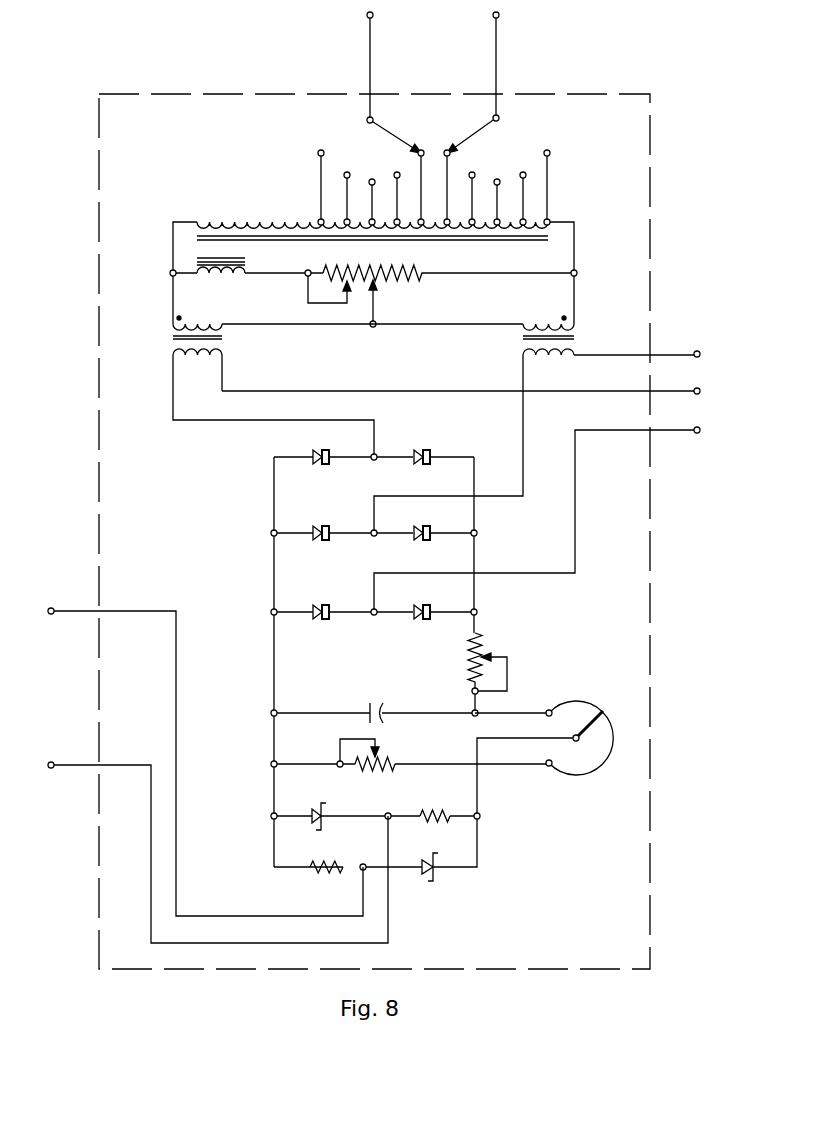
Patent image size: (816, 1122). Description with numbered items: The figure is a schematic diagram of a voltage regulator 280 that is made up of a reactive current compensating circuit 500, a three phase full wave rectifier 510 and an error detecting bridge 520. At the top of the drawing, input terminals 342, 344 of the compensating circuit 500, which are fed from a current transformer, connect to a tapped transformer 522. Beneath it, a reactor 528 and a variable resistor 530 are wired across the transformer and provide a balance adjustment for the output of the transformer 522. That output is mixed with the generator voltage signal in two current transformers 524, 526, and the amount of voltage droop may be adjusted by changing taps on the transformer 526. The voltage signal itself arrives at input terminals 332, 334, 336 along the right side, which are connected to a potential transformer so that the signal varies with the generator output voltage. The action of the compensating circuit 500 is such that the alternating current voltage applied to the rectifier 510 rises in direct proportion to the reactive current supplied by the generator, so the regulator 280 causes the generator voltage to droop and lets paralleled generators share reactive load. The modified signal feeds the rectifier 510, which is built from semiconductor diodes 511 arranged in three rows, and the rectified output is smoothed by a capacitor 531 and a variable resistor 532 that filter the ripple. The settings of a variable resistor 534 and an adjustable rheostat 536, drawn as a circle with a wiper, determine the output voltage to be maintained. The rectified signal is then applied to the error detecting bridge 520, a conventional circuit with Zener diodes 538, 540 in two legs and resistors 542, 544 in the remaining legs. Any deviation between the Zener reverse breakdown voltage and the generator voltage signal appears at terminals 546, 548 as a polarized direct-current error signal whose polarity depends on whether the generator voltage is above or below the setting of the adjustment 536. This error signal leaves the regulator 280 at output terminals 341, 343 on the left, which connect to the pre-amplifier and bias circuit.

The voltage regulator 280 is at (652, 757).
The input terminal 342 is at (367, 16).
The input terminal 344 is at (499, 17).
The reactive current compensating circuit 500 is at (157, 310).
The tapped transformer 522 is at (282, 210).
The reactor 528 is at (208, 276).
The variable resistor 530 is at (399, 280).
The current transformer 524 is at (222, 336).
The current transformer 526 is at (523, 337).
The input terminal 336 is at (712, 348).
The input terminal 334 is at (712, 385).
The input terminal 332 is at (712, 424).
The three phase full wave rectifier 510 is at (250, 540).
The semiconductor diode 511 is at (422, 451).
The variable resistor 532 is at (483, 651).
The capacitor 531 is at (376, 703).
The adjustable rheostat 536 is at (573, 703).
The variable resistor 534 is at (388, 757).
The error detecting bridge 520 is at (246, 848).
The Zener diode 538 is at (316, 810).
The terminal 546 is at (271, 816).
The resistor 542 is at (421, 810).
The terminal 548 is at (480, 816).
The resistor 544 is at (342, 872).
The Zener diode 540 is at (425, 881).
The output terminal 341 is at (48, 610).
The output terminal 343 is at (210, 840).